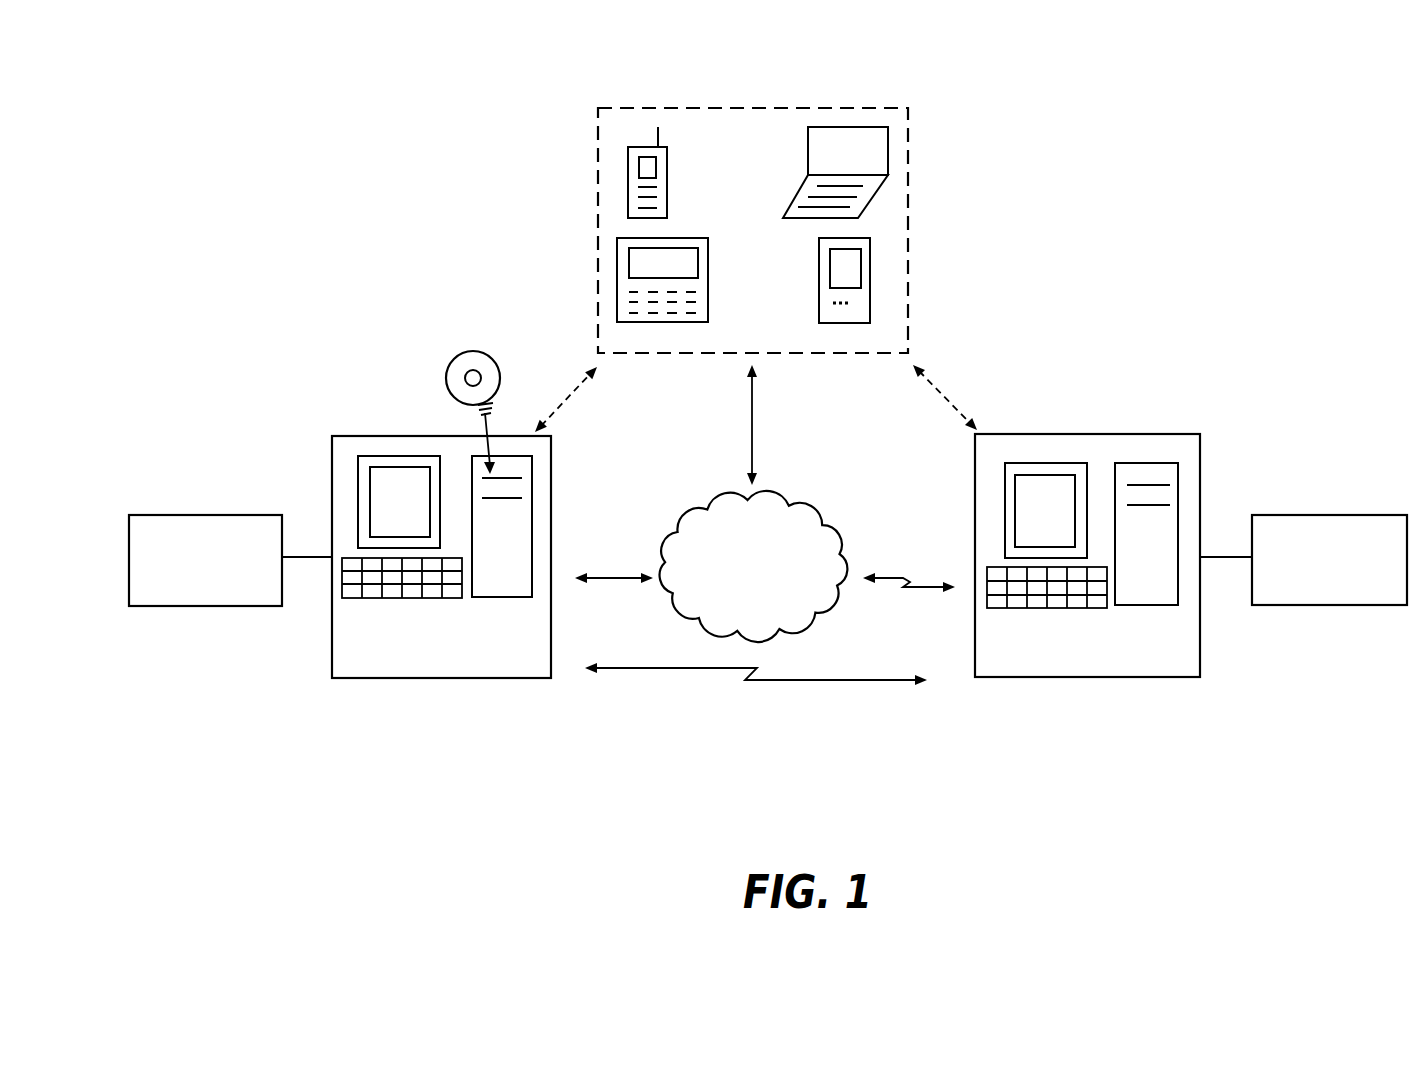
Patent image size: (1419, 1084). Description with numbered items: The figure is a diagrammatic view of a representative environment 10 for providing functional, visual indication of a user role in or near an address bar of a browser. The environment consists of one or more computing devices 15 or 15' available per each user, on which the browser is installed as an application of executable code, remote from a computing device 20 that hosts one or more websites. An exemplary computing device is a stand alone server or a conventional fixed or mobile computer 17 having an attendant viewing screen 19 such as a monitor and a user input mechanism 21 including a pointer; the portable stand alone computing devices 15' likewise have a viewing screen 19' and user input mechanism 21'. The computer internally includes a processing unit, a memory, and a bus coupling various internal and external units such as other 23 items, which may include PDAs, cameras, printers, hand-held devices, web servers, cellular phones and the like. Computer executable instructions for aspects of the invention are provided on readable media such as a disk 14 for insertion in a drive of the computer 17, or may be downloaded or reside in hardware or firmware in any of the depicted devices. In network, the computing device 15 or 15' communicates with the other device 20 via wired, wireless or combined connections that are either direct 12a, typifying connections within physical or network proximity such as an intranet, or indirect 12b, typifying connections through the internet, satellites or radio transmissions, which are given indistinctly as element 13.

The representative environment 10 is at (170, 261).
The direct connection 12a is at (563, 407).
The indirect connection 12b is at (753, 423).
The indirect connection element 13 is at (823, 517).
The disk 14 is at (472, 353).
The computing device 15 is at (441, 530).
The computing device 15' is at (799, 230).
The computer 17 is at (503, 599).
The viewing screen 19 is at (710, 505).
The viewing screen 19' is at (752, 225).
The computing device hosting websites 20 is at (1160, 678).
The user input mechanism 21 is at (724, 603).
The user input mechanism 21' is at (745, 239).
The other items 23 is at (198, 513).